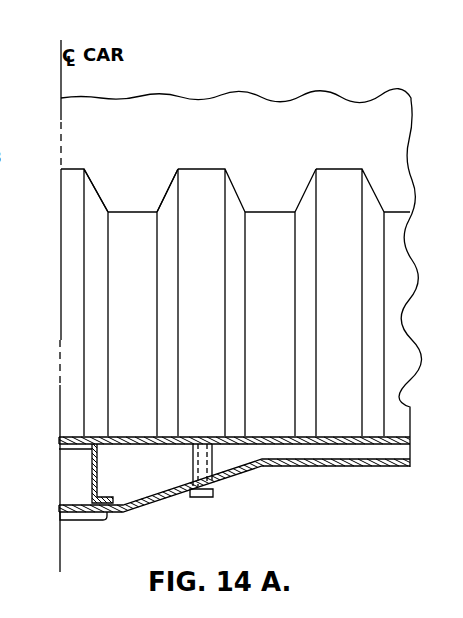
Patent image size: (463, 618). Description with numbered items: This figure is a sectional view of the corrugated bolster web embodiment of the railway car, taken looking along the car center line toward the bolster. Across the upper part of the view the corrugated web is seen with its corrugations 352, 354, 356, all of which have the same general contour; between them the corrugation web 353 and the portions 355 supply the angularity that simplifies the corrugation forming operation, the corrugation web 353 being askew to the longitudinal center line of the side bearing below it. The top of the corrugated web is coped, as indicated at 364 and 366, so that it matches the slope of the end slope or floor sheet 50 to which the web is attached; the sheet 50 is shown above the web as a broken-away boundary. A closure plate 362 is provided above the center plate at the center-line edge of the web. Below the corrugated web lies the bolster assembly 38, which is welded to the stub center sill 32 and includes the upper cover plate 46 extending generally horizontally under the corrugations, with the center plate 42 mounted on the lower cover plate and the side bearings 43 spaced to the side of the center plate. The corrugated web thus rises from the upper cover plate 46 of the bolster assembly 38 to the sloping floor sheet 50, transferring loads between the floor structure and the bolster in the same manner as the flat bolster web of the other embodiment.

The end slope sheet 50 is at (238, 123).
The corrugation 352 is at (402, 364).
The corrugation web 353 is at (230, 192).
The corrugation 354 is at (119, 302).
The angular portion 355 is at (172, 195).
The corrugation 356 is at (270, 324).
The closure plate 362 is at (67, 277).
The coped portion 364 is at (138, 197).
The coped portion 366 is at (301, 163).
The stub center sill 32 is at (100, 478).
The bolster assembly 38 is at (233, 488).
The center plate 42 is at (77, 520).
The side bearings 43 is at (201, 498).
The upper cover plate 46 is at (336, 445).